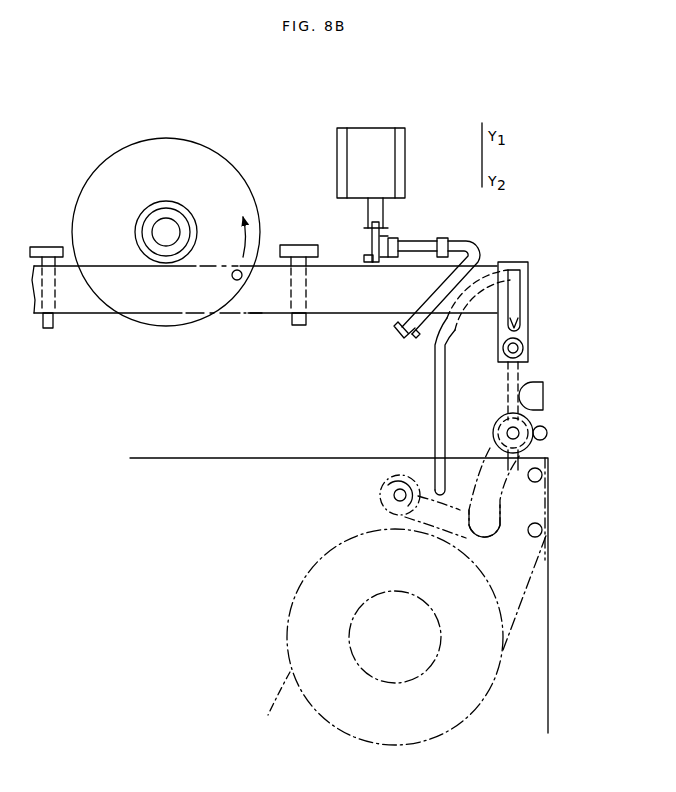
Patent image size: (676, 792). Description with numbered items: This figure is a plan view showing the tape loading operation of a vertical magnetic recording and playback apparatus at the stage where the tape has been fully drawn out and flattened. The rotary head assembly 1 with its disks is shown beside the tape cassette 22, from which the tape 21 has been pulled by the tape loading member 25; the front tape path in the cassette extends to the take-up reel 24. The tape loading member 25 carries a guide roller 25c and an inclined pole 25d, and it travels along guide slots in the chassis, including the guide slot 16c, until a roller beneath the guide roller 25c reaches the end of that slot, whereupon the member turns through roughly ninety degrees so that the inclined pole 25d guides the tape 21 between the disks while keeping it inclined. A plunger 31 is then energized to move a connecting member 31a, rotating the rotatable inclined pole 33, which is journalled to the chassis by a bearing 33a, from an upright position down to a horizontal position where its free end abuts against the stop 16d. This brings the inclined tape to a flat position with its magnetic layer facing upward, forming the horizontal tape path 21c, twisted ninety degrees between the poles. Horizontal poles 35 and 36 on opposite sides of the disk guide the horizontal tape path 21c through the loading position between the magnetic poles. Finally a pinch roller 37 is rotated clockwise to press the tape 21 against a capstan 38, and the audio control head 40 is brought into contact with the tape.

The rotary head assembly 1 is at (257, 201).
The tape 21 is at (97, 318).
The horizontal tape path 21c is at (262, 318).
The tape cassette 22 is at (552, 608).
The take-up reel 24 is at (270, 714).
The tape loading member 25 is at (531, 316).
The guide roller 25c is at (522, 348).
The inclined pole 25d is at (513, 290).
The guide slot 16c is at (522, 372).
The stop 16d is at (395, 325).
The plunger 31 is at (405, 150).
The connecting member 31a is at (372, 238).
The rotatable inclined pole 33 is at (475, 246).
The bearing 33a is at (445, 236).
The horizontal pole 35 is at (290, 330).
The horizontal pole 36 is at (46, 330).
The pinch roller 37 is at (500, 418).
The capstan 38 is at (548, 434).
The audio control head 40 is at (535, 390).